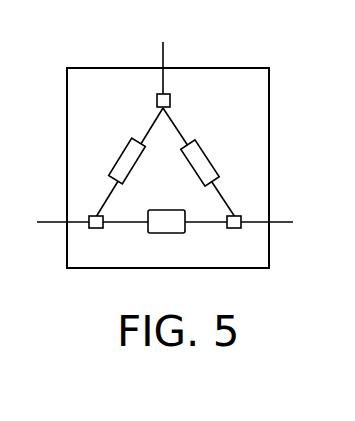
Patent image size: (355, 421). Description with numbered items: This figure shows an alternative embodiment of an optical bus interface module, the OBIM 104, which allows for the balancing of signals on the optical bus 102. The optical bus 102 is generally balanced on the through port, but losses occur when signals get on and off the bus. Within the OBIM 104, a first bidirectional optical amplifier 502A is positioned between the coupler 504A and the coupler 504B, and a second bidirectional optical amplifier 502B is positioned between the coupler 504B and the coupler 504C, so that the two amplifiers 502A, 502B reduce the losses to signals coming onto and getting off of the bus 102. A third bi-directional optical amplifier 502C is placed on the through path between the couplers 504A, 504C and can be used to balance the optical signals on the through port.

The optical bus 102 is at (280, 222).
The OBIM 104 is at (238, 35).
The bidirectional optical amplifier 502A is at (111, 161).
The bidirectional optical amplifier 502B is at (217, 163).
The bi-directional optical amplifier 502C is at (168, 234).
The coupler 504A is at (98, 235).
The coupler 504B is at (188, 102).
The coupler 504C is at (234, 234).